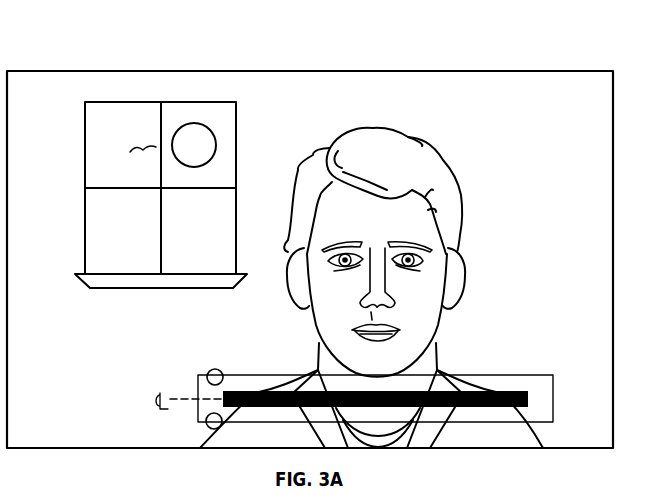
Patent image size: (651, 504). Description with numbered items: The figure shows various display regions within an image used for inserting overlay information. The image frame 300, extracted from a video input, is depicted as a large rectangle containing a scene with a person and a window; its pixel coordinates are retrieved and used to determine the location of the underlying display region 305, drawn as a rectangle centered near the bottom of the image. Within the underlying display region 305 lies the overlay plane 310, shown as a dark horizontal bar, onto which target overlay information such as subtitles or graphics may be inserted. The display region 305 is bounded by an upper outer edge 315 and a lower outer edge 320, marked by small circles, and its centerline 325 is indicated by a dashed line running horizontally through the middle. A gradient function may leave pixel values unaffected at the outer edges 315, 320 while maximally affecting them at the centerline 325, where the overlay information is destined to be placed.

The image frame 300 is at (310, 232).
The underlying display region 305 is at (375, 371).
The overlay plane 310 is at (397, 363).
The outer edge 315 is at (192, 349).
The outer edge 320 is at (192, 450).
The centerline 325 is at (174, 400).